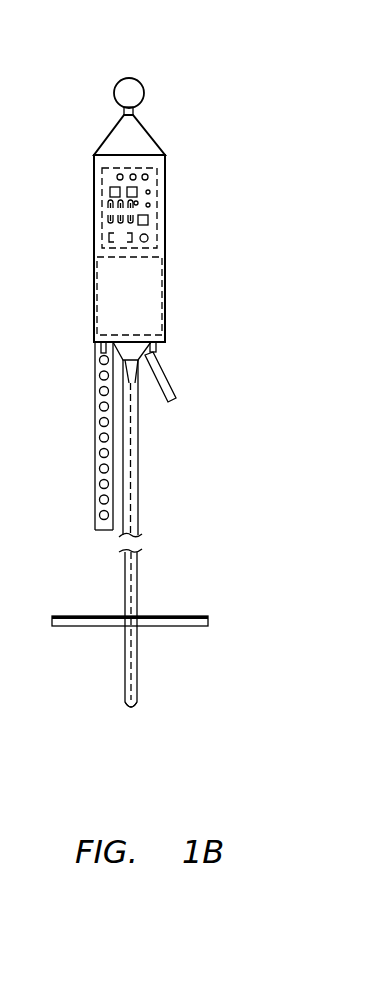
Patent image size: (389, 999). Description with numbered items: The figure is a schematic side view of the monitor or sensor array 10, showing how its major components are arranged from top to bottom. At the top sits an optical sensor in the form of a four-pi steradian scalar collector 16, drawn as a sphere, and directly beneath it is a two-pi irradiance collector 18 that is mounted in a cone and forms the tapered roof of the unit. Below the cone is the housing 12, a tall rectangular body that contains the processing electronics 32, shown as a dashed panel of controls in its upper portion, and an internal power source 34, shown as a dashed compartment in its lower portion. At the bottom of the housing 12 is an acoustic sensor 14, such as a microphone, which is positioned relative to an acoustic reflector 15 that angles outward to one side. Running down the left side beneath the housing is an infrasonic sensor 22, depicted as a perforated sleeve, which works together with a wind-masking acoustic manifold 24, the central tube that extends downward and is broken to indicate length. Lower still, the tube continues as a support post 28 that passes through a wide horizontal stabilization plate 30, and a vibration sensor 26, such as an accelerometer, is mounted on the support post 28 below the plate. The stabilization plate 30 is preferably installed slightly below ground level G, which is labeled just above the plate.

The monitor or sensor array 10 is at (152, 34).
The housing 12 is at (193, 227).
The acoustic sensor 14 is at (158, 348).
The acoustic reflector 15 is at (173, 392).
The scalar collector 16 is at (143, 87).
The irradiance collector 18 is at (152, 133).
The infrasonic sensor 22 is at (95, 352).
The wind-masking acoustic manifold 24 is at (112, 467).
The vibration sensor 26 is at (137, 690).
The support post 28 is at (125, 647).
The stabilization plate 30 is at (208, 626).
The processing electronics 32 is at (173, 180).
The internal power source 34 is at (165, 275).
The ground level G is at (187, 617).